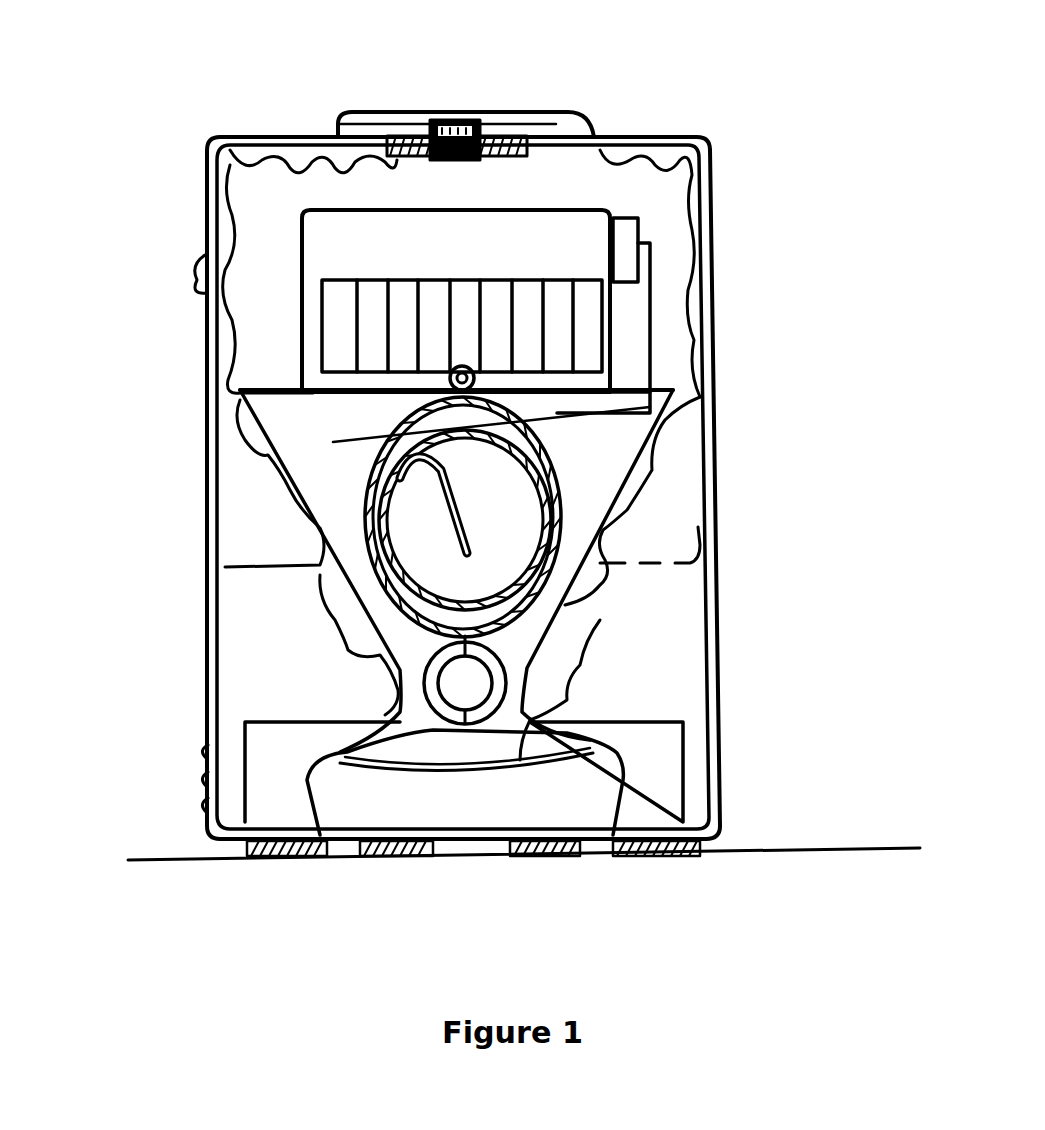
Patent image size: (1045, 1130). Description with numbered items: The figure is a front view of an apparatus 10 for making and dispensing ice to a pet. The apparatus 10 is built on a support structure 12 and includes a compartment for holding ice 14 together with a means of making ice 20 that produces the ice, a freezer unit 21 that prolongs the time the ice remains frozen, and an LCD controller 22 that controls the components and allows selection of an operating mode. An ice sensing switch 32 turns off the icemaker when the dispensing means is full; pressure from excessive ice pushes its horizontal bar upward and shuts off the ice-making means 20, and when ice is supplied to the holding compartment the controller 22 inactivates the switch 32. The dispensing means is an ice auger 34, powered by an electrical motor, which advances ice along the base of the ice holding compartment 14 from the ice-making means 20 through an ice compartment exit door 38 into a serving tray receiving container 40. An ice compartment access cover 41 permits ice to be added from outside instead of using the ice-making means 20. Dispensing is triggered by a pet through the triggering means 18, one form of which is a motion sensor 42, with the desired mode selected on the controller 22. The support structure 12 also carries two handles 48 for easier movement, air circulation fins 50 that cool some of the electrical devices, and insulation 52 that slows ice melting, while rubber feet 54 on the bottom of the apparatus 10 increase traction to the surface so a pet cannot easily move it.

The apparatus 10 is at (728, 390).
The support structure 12 is at (217, 687).
The compartment for holding ice 14 is at (327, 473).
The means for triggering by a pet the dispensing of the ice 18 is at (251, 358).
The motion sensor 42 is at (460, 376).
The means of making ice 20 is at (477, 247).
The freezer unit 21 is at (657, 767).
The LCD controller 22 is at (392, 143).
The ice sensing switch 32 is at (648, 320).
The ice auger 34 is at (452, 510).
The ice compartment exit door 38 is at (470, 691).
The serving tray receiving container 40 is at (450, 747).
The ice compartment access cover 41 is at (443, 110).
The handles 48 is at (193, 280).
The air circulation fins 50 is at (720, 755).
The insulation 52 is at (598, 542).
The rubber feet 54 is at (653, 855).